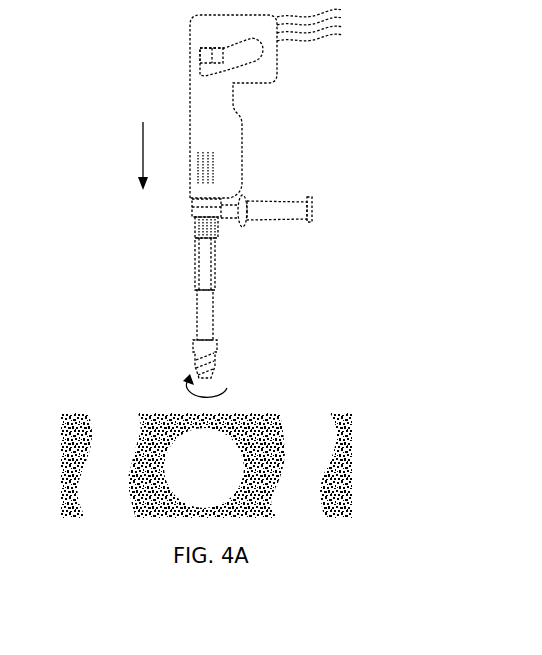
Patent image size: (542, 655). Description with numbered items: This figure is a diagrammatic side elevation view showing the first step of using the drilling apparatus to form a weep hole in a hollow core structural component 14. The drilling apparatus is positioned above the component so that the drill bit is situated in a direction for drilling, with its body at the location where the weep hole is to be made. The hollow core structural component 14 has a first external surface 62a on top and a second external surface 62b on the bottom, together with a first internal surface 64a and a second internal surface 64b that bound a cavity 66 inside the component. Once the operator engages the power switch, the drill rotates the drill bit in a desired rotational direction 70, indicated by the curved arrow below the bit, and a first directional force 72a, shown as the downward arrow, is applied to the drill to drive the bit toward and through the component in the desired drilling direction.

The hollow core structural component 14 is at (343, 468).
The first one or more external surface 62a is at (251, 412).
The second one or more external surface 62b is at (160, 518).
The first one or more internal surface 64a is at (202, 443).
The second one or more internal surface 64b is at (232, 513).
The cavity 66 is at (162, 422).
The desired rotational direction 70 is at (228, 391).
The first directional force 72a is at (143, 152).